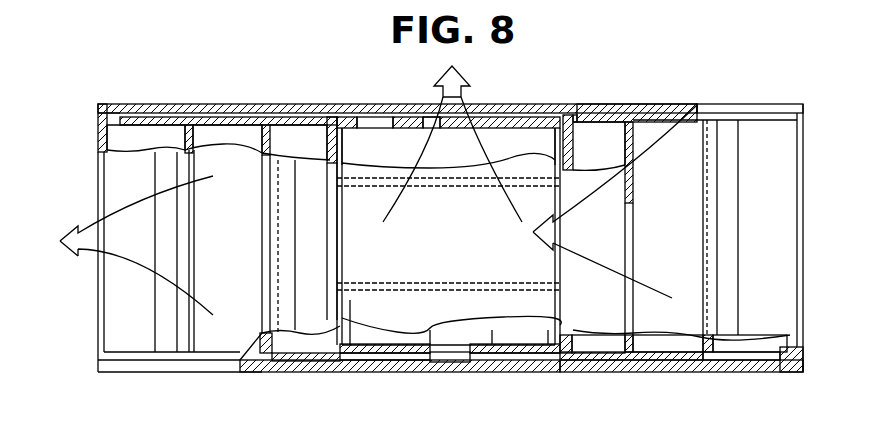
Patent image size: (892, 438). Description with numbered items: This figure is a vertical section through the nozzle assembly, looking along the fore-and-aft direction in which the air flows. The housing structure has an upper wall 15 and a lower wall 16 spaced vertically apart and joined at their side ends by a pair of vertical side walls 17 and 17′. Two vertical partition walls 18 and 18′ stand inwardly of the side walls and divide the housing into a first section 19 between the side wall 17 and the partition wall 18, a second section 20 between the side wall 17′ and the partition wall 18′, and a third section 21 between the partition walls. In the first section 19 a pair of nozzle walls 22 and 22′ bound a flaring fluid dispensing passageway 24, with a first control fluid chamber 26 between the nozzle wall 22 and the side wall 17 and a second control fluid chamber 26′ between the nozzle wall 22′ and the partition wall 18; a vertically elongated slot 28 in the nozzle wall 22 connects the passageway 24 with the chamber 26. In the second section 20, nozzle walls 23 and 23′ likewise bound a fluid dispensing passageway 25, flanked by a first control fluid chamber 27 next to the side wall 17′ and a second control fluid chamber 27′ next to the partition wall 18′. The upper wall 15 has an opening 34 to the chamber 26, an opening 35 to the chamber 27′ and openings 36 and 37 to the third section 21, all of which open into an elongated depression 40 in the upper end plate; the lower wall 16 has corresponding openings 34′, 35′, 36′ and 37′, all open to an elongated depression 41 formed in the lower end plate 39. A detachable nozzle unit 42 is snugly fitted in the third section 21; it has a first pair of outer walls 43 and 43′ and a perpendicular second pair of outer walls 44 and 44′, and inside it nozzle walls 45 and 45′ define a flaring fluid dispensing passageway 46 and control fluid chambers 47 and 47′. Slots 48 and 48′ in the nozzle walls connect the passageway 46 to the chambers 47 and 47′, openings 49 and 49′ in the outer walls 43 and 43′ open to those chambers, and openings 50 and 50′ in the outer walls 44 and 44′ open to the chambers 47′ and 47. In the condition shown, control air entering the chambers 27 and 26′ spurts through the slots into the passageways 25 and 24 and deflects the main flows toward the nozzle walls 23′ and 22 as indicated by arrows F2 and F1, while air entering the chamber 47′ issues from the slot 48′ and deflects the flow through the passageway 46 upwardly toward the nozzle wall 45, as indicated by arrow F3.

The upper wall 15 is at (766, 122).
The lower wall 16 is at (136, 352).
The side wall 17 is at (103, 325).
The side wall 17′ is at (800, 226).
The partition wall 18 is at (323, 152).
The partition wall 18′ is at (568, 130).
The first section 19 is at (218, 338).
The second section 20 is at (668, 338).
The third section 21 is at (372, 372).
The nozzle wall 22 is at (196, 132).
The nozzle wall 22′ is at (259, 160).
The nozzle wall 23 is at (704, 160).
The nozzle wall 23′ is at (636, 145).
The fluid dispensing passageway 24 is at (236, 263).
The fluid dispensing passageway 25 is at (676, 248).
The first control fluid chamber 26 is at (113, 150).
The second control fluid chamber 26′ is at (288, 125).
The first control fluid chamber 27 is at (762, 345).
The second control fluid chamber 27′ is at (612, 164).
The vertically elongated slot 28 is at (752, 104).
The opening 34 is at (121, 118).
The opening 34′ is at (285, 361).
The opening 35 is at (608, 113).
The opening 35′ is at (735, 361).
The opening 36 is at (436, 94).
The opening 36′ is at (433, 362).
The opening 37 is at (362, 117).
The opening 37′ is at (512, 362).
The lower end plate 39 is at (178, 372).
The elongated depression 40 is at (220, 105).
The elongated depression 41 is at (585, 372).
The detachable nozzle unit 42 is at (537, 117).
The outer wall 43 is at (408, 128).
The outer wall 43′ is at (492, 344).
The outer wall 44 is at (342, 150).
The outer wall 44′ is at (548, 344).
The nozzle wall 45 is at (368, 187).
The nozzle wall 45′ is at (368, 284).
The fluid dispensing passageway 46 is at (441, 255).
The control fluid chamber 47 is at (461, 164).
The control fluid chamber 47′ is at (458, 332).
The elongated slot 48 is at (450, 187).
The elongated slot 48′ is at (445, 284).
The opening 49 is at (463, 128).
The opening 49′ is at (430, 344).
The opening 50 is at (343, 318).
The opening 50′ is at (558, 138).
The air flow arrow F1 is at (86, 256).
The air flow arrow F2 is at (545, 240).
The air flow arrow F3 is at (470, 92).